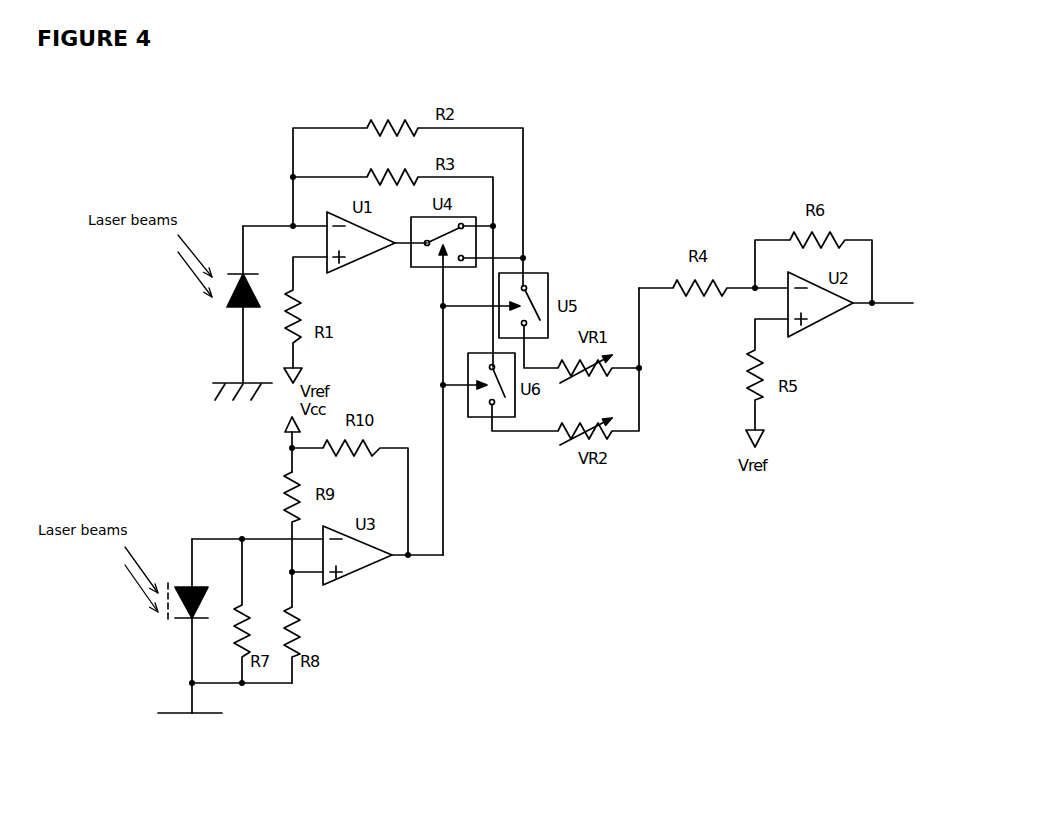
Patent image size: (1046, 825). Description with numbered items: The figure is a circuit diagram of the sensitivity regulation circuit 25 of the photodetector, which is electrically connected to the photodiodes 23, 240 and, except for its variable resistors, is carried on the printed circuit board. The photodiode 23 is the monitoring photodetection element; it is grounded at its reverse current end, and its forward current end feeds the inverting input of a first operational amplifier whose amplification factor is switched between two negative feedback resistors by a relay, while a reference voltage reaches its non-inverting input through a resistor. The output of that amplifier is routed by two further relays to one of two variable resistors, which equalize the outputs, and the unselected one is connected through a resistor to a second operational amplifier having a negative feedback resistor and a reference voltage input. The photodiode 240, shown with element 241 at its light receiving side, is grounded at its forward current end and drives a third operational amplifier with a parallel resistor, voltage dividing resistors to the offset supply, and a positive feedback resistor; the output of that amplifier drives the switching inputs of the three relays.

The photodiode 23 is at (232, 273).
The photodiode 240 is at (182, 587).
The light receiving surface 241 is at (165, 583).
The circuit 25 is at (692, 565).